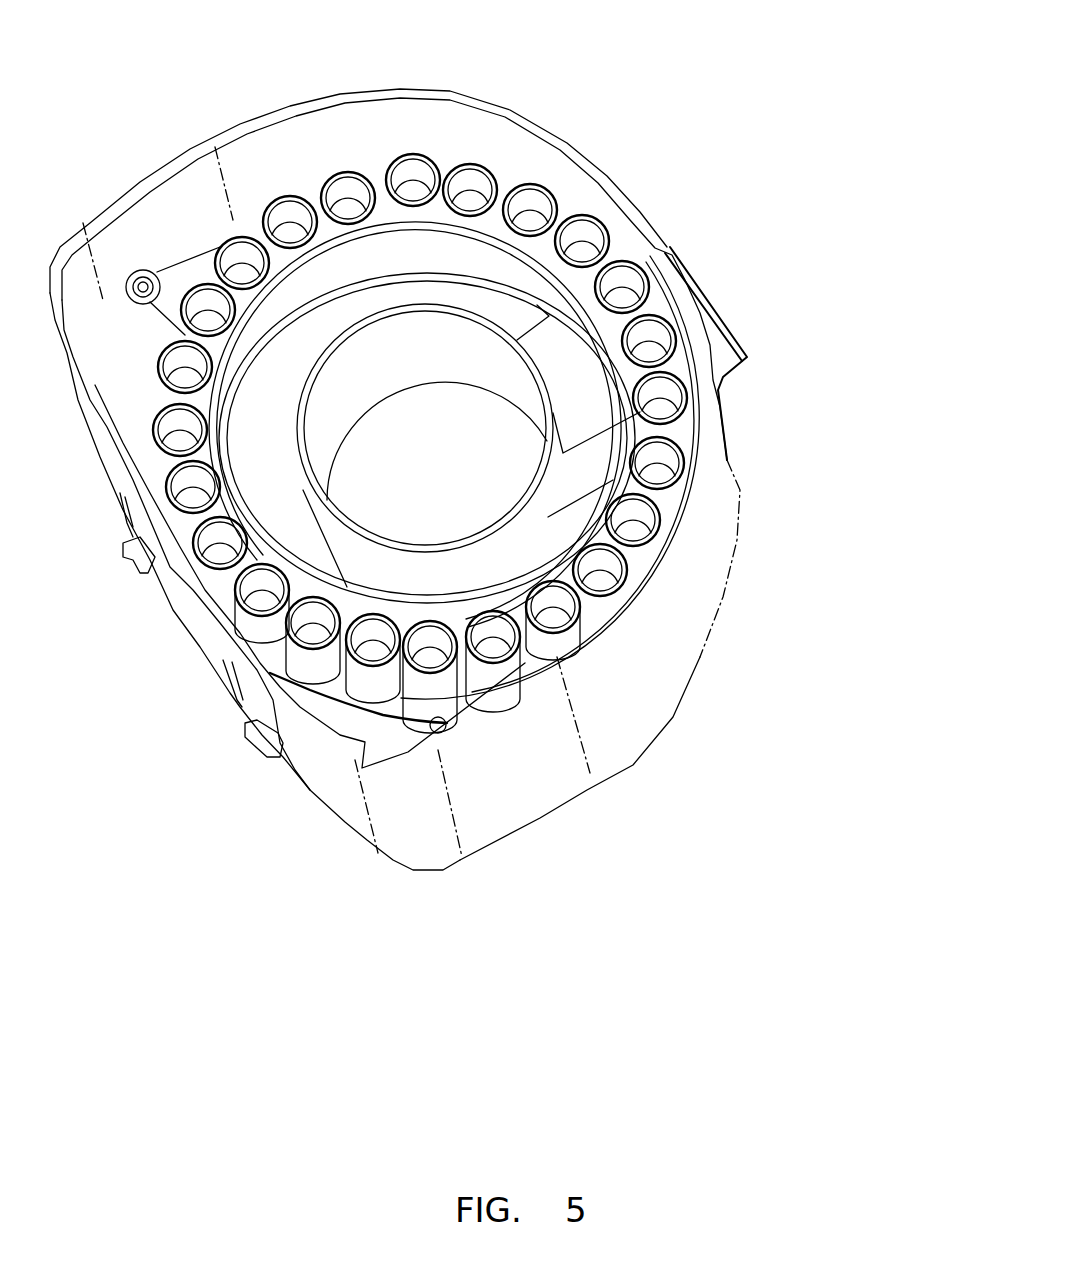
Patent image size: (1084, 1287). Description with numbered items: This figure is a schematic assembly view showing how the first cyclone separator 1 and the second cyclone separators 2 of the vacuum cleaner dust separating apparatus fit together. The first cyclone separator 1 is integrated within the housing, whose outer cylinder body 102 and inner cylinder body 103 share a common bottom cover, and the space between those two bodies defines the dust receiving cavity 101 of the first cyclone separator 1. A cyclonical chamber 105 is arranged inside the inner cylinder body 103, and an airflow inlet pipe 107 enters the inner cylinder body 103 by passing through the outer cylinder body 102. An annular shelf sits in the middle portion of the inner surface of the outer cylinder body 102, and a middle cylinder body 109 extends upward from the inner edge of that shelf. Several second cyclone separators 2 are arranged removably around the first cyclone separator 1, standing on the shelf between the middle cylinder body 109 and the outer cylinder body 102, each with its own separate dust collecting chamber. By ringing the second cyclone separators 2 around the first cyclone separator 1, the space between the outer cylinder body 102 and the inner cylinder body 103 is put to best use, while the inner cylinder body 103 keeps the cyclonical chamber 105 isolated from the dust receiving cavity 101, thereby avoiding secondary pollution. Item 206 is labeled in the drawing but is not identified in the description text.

The first cyclone separator 1 is at (680, 653).
The second cyclone separators 2 is at (522, 663).
The dust receiving cavity 101 is at (373, 300).
The outer cylinder body 102 is at (705, 590).
The inner cylinder body 103 is at (548, 498).
The cyclonical chamber 105 is at (468, 415).
The airflow inlet pipe 107 is at (723, 358).
The middle cylinder body 109 is at (617, 452).
The tube 206 is at (500, 673).